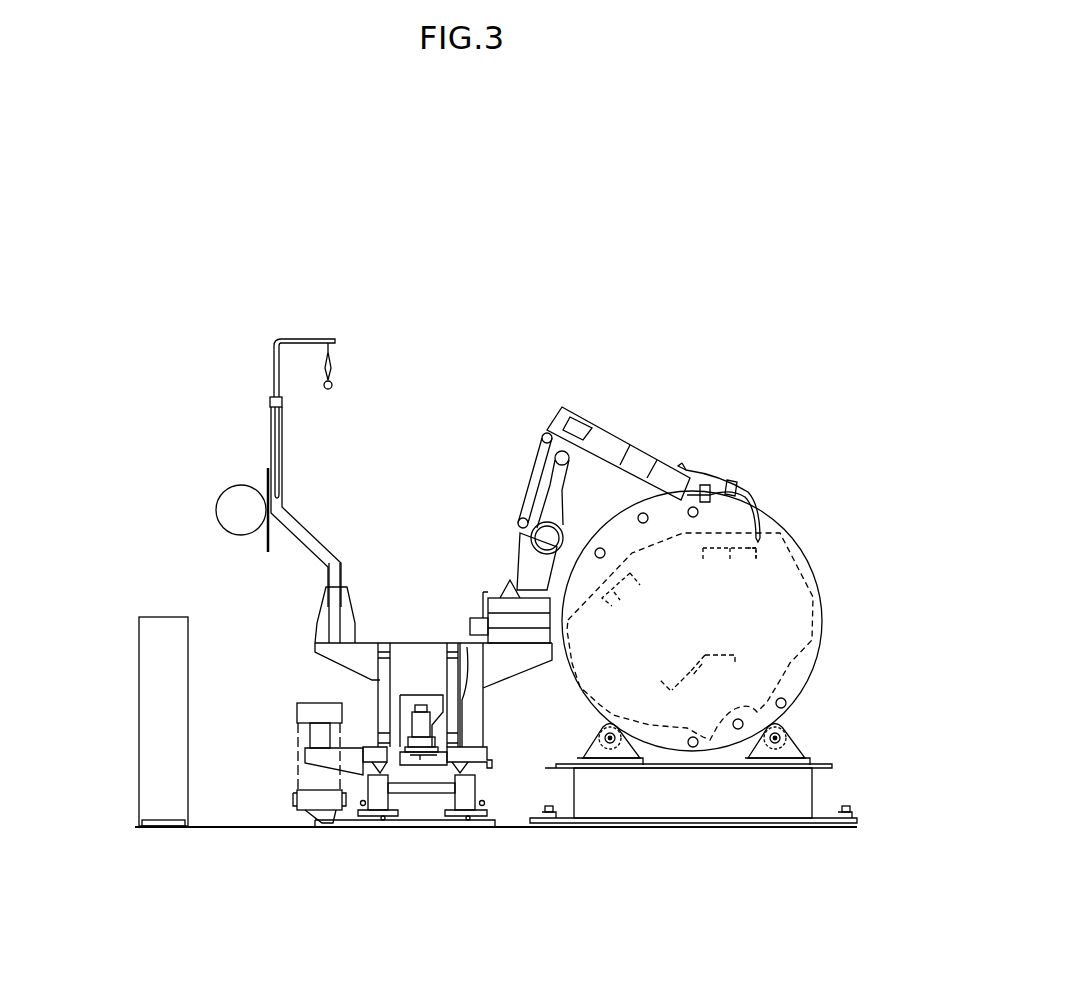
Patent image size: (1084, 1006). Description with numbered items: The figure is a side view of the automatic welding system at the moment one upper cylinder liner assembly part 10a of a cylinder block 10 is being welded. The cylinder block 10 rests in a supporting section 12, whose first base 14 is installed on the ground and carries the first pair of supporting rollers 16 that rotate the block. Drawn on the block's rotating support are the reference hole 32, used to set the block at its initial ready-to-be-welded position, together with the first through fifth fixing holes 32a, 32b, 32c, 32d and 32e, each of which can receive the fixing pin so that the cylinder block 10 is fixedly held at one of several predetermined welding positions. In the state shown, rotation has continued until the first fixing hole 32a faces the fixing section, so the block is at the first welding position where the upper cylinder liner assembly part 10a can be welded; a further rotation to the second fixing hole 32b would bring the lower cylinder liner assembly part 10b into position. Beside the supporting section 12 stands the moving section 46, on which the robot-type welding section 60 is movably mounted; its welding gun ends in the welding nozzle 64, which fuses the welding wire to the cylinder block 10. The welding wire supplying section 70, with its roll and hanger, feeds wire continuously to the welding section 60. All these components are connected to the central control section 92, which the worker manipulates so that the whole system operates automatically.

The cylinder block 10 is at (754, 587).
The upper cylinder liner assembly part 10a is at (750, 545).
The lower cylinder liner assembly part 10b is at (695, 683).
The supporting section 12 is at (832, 757).
The first base 14 is at (800, 788).
The first pair of supporting rollers 16 is at (610, 747).
The reference hole 32 is at (740, 730).
The first fixing hole 32a is at (693, 748).
The second fixing hole 32b is at (600, 548).
The third fixing hole 32c is at (693, 507).
The fourth fixing hole 32d is at (786, 705).
The fifth fixing hole 32e is at (643, 513).
The moving section 46 is at (293, 761).
The welding section 60 is at (520, 461).
The welding nozzle 64 is at (758, 543).
The welding wire supplying section 70 is at (253, 410).
The central control section 92 is at (148, 632).